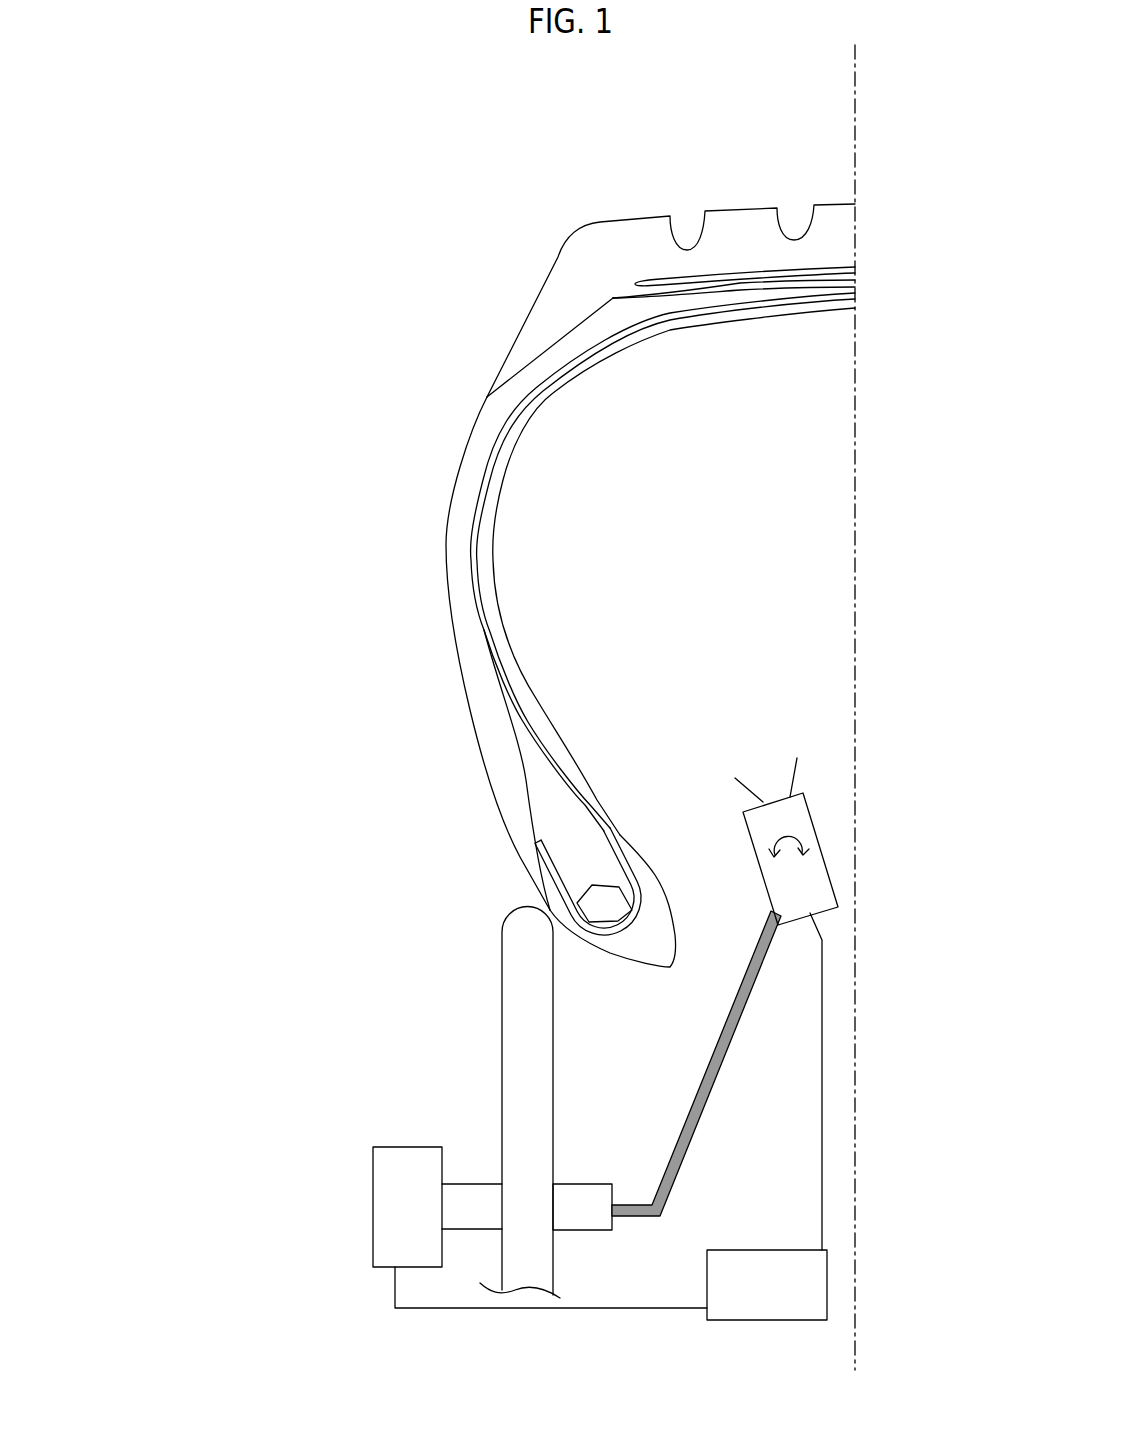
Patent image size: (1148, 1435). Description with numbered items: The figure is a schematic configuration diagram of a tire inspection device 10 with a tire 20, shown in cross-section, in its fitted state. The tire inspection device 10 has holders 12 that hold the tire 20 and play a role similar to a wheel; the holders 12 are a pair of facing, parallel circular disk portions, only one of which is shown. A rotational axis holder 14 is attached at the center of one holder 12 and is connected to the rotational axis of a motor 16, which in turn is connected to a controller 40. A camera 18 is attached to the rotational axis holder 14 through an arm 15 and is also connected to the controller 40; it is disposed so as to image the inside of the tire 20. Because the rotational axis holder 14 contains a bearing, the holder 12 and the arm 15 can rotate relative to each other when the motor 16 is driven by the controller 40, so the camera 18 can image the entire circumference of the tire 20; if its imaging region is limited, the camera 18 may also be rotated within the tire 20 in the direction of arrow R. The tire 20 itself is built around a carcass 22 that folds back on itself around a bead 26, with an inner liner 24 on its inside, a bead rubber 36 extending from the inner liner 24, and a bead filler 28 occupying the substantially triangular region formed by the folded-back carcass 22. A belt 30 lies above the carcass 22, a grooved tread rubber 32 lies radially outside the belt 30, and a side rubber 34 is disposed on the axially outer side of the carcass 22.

The tire inspection device 10 is at (291, 890).
The holder 12 is at (502, 1093).
The rotational axis holder 14 is at (580, 1184).
The arm 15 is at (705, 1107).
The motor 16 is at (373, 1197).
The camera 18 is at (793, 922).
The tire 20 is at (415, 352).
The carcass 22 is at (513, 428).
The inner liner 24 is at (497, 568).
The bead 26 is at (613, 913).
The bead filler 28 is at (577, 833).
The belt 30 is at (630, 278).
The tread rubber 32 is at (637, 236).
The side rubber 34 is at (462, 573).
The bead rubber 36 is at (630, 943).
The controller 40 is at (785, 1250).